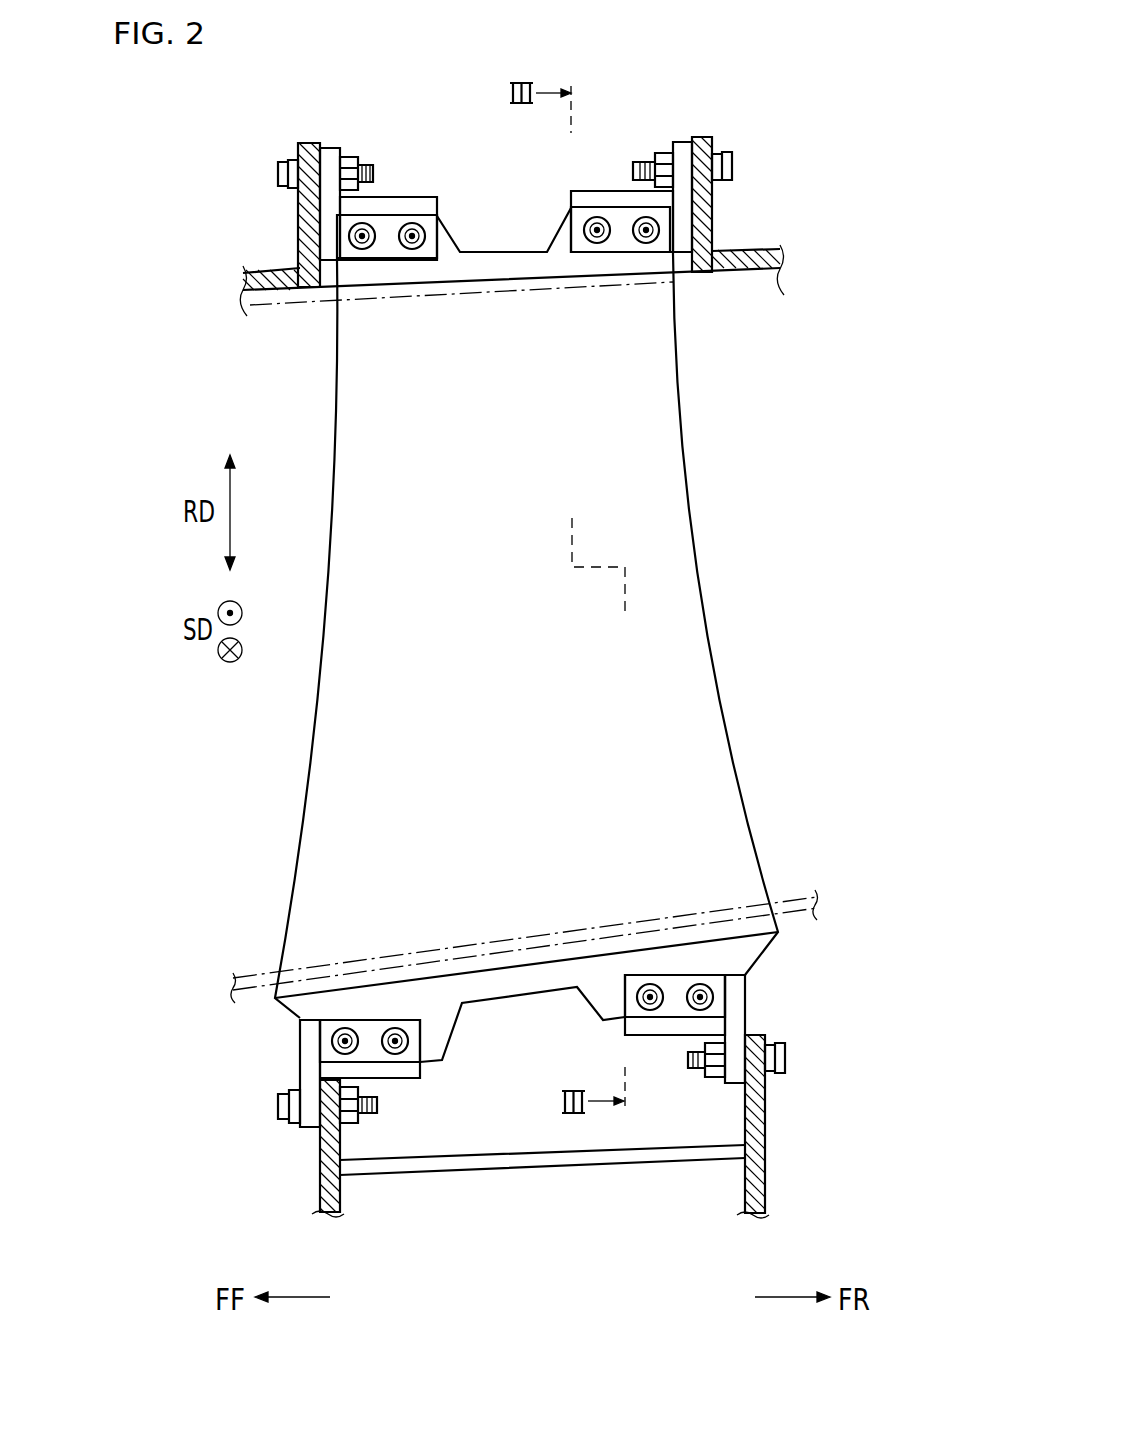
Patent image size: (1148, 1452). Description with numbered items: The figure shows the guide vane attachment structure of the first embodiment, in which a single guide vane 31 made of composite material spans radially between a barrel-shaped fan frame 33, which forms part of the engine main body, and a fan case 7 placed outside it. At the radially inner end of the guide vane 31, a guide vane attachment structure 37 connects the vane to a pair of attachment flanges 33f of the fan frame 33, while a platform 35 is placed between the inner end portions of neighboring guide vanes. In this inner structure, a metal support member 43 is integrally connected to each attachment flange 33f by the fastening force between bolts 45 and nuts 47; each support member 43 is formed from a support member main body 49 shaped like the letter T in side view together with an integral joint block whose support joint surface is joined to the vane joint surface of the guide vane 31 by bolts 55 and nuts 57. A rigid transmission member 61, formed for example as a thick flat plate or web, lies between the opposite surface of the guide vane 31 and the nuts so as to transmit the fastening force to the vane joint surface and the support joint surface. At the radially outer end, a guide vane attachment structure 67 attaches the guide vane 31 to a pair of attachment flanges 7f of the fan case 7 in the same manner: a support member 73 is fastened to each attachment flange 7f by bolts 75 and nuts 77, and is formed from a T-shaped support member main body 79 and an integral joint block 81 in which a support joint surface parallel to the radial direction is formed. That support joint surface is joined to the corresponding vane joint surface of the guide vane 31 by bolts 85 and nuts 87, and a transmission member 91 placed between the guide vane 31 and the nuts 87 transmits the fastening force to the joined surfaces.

The fan case 7 is at (745, 252).
The attachment flange 7f is at (309, 143).
The guide vane 31 is at (700, 598).
The fan frame 33 is at (766, 1163).
The attachment flange 33f is at (320, 1175).
The platform 35 is at (516, 945).
The guide vane attachment structure 37 is at (524, 1030).
The support member 43 is at (305, 1070).
The bolt 45 is at (278, 1106).
The nut 47 is at (357, 1123).
The support member main body 49 is at (394, 1070).
The bolt 55 is at (338, 1050).
The nut 57 is at (337, 1035).
The transmission member 61 is at (367, 1028).
The guide vane attachment structure 67 is at (495, 222).
The support member 73 is at (328, 238).
The bolt 75 is at (278, 175).
The nut 77 is at (355, 160).
The support member main body 79 is at (390, 197).
The joint block 81 is at (577, 207).
The bolt 85 is at (413, 248).
The nut 87 is at (418, 217).
The transmission member 91 is at (380, 250).